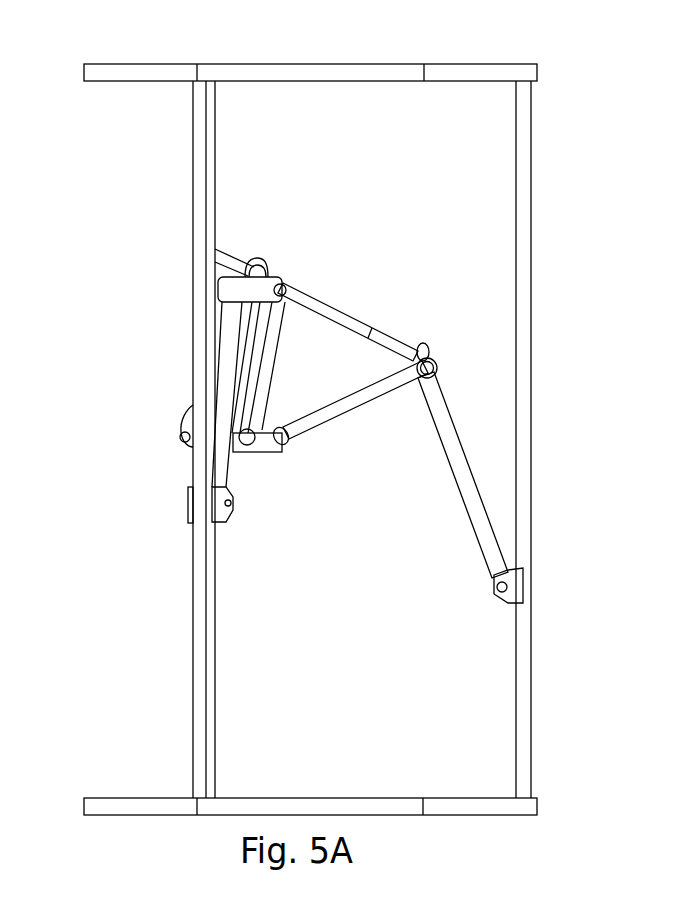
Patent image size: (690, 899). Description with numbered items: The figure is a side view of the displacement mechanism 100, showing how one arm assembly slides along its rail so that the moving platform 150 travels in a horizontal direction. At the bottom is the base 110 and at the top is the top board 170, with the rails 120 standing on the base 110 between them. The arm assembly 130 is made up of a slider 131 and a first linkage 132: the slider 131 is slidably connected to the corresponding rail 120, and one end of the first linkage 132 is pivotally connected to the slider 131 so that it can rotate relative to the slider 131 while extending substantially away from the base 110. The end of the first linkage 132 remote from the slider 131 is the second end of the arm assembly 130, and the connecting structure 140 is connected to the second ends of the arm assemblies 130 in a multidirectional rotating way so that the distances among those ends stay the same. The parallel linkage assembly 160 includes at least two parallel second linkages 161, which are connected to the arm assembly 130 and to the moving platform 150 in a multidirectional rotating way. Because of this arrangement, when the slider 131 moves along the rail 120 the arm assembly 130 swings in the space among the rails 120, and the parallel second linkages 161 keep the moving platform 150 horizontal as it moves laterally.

The displacement mechanism 100 is at (46, 44).
The base 110 is at (115, 797).
The rail 120 is at (201, 200).
The arm assembly 130 is at (554, 487).
The slider 131 is at (556, 570).
The first linkage 132 is at (480, 493).
The connecting structure 140 is at (352, 315).
The moving platform 150 is at (270, 453).
The parallel linkage assembly 160 is at (320, 440).
The second linkage 161 is at (390, 393).
The top board 170 is at (122, 82).